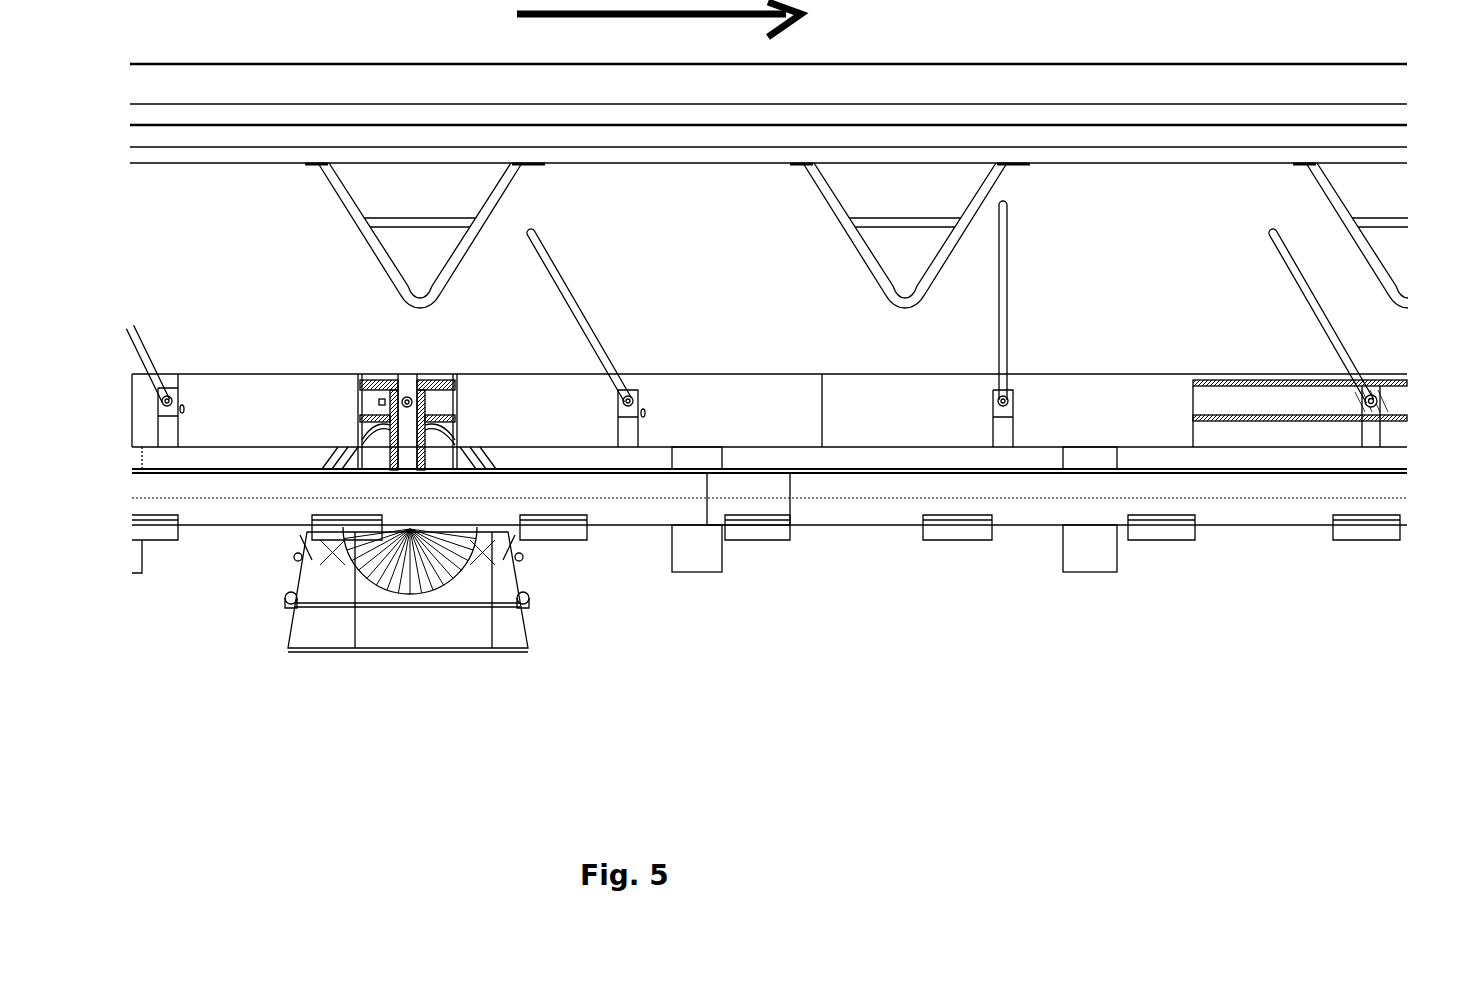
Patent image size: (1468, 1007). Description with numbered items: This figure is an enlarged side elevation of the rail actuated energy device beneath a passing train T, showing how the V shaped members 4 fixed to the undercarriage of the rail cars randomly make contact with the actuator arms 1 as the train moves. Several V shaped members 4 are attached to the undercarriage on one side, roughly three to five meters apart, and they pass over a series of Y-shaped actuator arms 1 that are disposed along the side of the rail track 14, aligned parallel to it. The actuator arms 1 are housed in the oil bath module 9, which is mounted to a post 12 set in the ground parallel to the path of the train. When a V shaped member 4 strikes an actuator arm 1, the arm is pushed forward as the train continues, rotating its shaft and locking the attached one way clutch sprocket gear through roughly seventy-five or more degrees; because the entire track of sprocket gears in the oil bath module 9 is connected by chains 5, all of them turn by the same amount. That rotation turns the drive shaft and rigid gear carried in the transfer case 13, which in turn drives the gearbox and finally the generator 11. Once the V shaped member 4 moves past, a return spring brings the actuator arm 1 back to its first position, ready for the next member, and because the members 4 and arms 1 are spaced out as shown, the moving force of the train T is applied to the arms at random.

The train T is at (1062, 16).
The V shaped member 4 is at (845, 217).
The oil bath module 9 is at (866, 371).
The actuator arm 1 is at (1008, 341).
The chains 5 is at (1239, 386).
The transfer case 13 is at (437, 392).
The rail track 14 is at (815, 513).
The post 12 is at (1072, 457).
The generator 11 is at (425, 622).